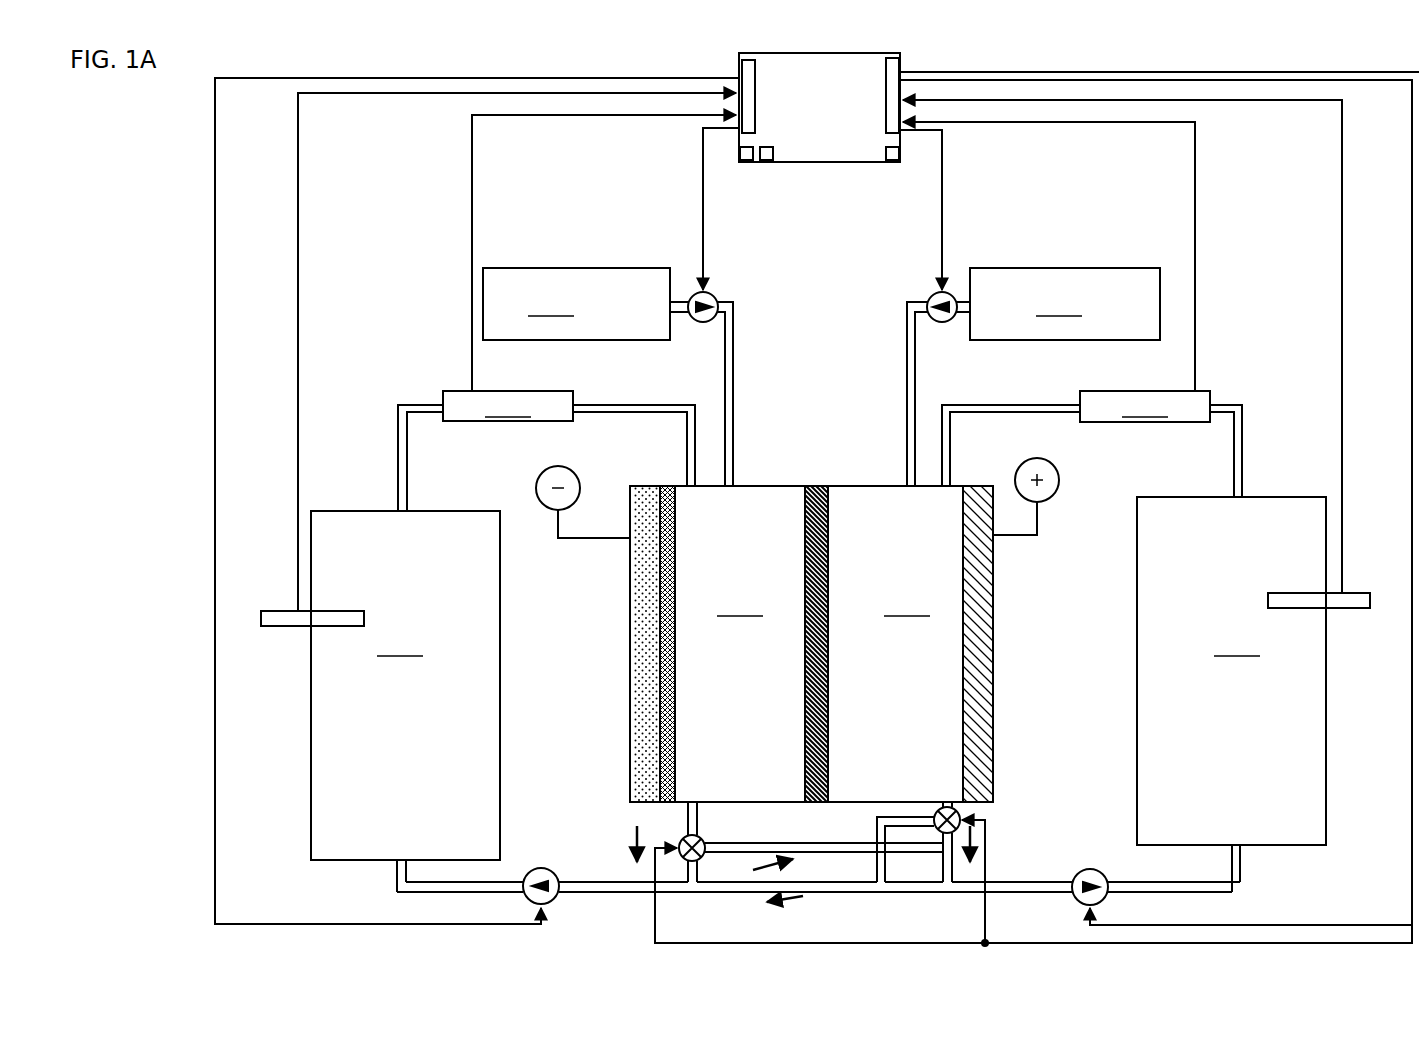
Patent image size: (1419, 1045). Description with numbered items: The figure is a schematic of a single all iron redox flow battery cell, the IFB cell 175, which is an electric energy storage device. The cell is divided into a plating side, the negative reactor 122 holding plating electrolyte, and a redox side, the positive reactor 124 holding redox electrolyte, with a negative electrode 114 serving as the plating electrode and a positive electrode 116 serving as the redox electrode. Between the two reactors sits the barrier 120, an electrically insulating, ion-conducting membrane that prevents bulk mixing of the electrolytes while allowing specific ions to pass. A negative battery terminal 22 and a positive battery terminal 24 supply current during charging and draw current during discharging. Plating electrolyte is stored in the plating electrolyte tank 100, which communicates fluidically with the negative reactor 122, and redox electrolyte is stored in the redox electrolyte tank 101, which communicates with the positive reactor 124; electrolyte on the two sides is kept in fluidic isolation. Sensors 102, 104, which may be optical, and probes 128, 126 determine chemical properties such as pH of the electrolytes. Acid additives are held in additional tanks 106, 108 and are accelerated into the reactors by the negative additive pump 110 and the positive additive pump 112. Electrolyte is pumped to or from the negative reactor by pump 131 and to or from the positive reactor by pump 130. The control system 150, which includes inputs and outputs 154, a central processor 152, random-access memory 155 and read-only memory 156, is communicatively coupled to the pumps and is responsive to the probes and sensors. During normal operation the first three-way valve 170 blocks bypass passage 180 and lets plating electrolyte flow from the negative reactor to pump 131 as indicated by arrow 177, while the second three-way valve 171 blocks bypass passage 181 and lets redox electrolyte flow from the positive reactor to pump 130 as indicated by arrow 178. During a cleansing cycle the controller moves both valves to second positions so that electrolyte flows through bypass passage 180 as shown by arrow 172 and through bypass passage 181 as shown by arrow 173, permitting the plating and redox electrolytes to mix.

The control system 150 is at (740, 55).
The inputs and outputs 154 is at (900, 58).
The central processor 152 is at (744, 160).
The random-access memory 155 is at (765, 160).
The read-only memory 156 is at (898, 163).
The additional tank 106 is at (576, 304).
The additional tank 108 is at (1065, 304).
The negative additive pump 110 is at (703, 327).
The positive additive pump 112 is at (942, 323).
The sensor 102 is at (546, 451).
The sensor 104 is at (1092, 444).
The plating electrolyte tank 100 is at (405, 701).
The redox electrolyte tank 101 is at (1231, 694).
The probe 128 is at (272, 611).
The probe 126 is at (1356, 593).
The IFB cell 175 is at (820, 398).
The negative electrode 114 is at (630, 642).
The positive electrode 116 is at (993, 640).
The barrier 120 is at (818, 802).
The negative reactor 122 is at (740, 644).
The positive reactor 124 is at (895, 644).
The negative battery terminal 22 is at (575, 470).
The positive battery terminal 24 is at (1052, 466).
The pump 131 is at (541, 868).
The pump 130 is at (1093, 869).
The first three-way valve 170 is at (700, 839).
The second three-way valve 171 is at (960, 816).
The bypass passage 180 is at (795, 843).
The bypass passage 181 is at (849, 893).
The arrow 172 is at (753, 873).
The arrow 173 is at (790, 898).
The arrow 177 is at (632, 842).
The arrow 178 is at (977, 836).